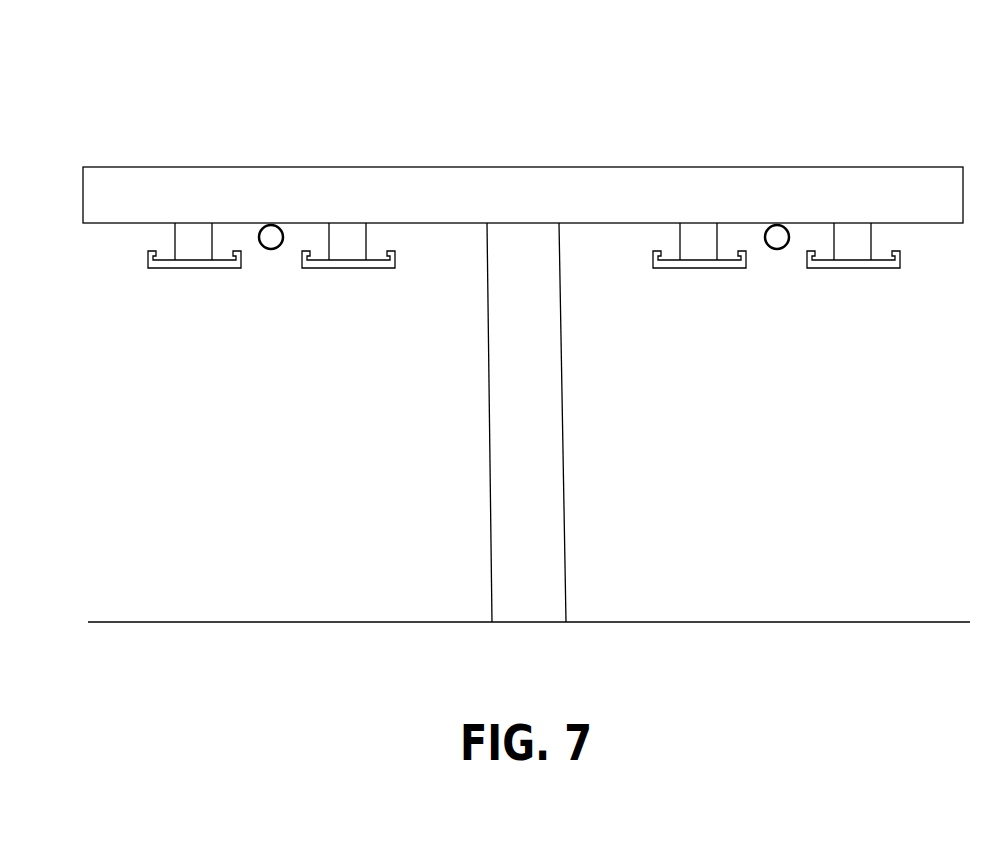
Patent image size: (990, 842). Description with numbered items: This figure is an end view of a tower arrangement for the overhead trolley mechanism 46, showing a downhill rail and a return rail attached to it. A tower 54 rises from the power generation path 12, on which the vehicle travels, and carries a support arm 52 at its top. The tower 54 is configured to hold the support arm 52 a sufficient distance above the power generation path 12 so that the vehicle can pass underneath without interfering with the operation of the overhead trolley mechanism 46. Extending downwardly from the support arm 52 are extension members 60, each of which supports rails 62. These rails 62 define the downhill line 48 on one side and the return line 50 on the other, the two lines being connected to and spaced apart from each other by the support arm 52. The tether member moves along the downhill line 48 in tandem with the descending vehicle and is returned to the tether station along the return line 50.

The power generation path 12 is at (691, 620).
The overhead trolley mechanism 46 is at (772, 131).
The downhill line 48 is at (278, 252).
The return line 50 is at (773, 251).
The support arms 52 is at (593, 185).
The towers 54 is at (532, 411).
The extension member 60 is at (193, 237).
The rails 62 is at (177, 270).